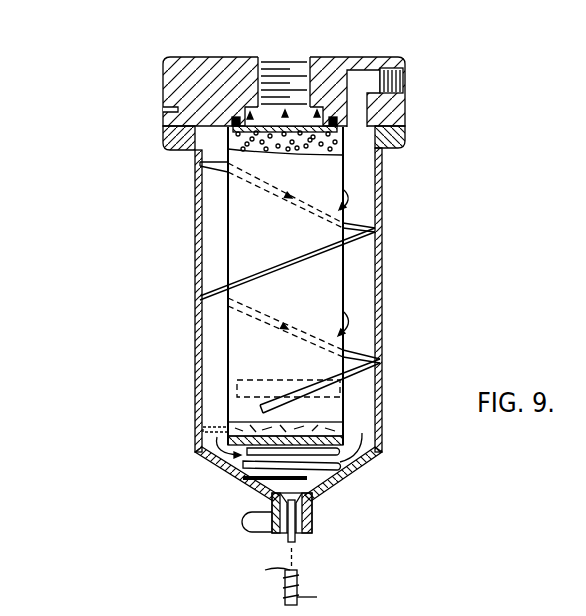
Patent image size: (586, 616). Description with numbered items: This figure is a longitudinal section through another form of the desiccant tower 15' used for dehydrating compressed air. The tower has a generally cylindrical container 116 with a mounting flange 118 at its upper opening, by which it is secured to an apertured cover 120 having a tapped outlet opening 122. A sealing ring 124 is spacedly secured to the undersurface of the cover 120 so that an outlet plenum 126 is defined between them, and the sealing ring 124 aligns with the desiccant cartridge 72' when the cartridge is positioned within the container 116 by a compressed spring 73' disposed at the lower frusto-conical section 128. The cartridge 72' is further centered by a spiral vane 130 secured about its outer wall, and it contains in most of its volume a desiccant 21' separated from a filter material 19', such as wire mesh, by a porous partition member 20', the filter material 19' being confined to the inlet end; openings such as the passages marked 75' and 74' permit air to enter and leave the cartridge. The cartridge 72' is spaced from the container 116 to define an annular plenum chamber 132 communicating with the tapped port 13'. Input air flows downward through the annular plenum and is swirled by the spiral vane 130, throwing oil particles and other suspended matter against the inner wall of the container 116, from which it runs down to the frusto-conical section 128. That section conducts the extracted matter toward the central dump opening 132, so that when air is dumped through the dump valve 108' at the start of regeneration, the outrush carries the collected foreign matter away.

The apertured cover 120 is at (348, 68).
The tapped outlet opening 122 is at (275, 66).
The outlet plenum 126 is at (312, 110).
The tapped port 13' is at (397, 96).
The mounting flange 118 is at (404, 128).
The sealing ring 124 is at (236, 118).
The desiccant 21' is at (304, 151).
The cylindrical container 116 is at (381, 290).
The frusto-conical section 128 is at (368, 467).
The desiccant cartridge 72' is at (302, 286).
The granular filter medium 75' is at (285, 147).
The desiccant tower 15' is at (382, 263).
The spiral vane 130 is at (314, 258).
The porous partition member 20' is at (307, 391).
The filter material 19' is at (222, 415).
The filter media layer 74' is at (285, 420).
The compressed spring 73' is at (293, 467).
The dump valve 108' is at (313, 549).
The annular plenum chamber 132 is at (367, 320).